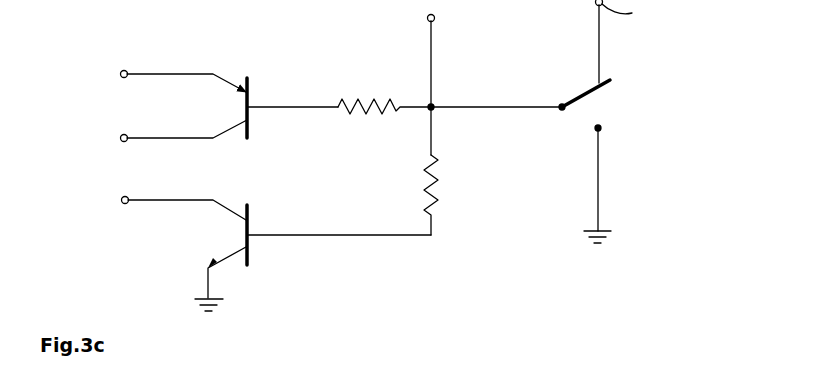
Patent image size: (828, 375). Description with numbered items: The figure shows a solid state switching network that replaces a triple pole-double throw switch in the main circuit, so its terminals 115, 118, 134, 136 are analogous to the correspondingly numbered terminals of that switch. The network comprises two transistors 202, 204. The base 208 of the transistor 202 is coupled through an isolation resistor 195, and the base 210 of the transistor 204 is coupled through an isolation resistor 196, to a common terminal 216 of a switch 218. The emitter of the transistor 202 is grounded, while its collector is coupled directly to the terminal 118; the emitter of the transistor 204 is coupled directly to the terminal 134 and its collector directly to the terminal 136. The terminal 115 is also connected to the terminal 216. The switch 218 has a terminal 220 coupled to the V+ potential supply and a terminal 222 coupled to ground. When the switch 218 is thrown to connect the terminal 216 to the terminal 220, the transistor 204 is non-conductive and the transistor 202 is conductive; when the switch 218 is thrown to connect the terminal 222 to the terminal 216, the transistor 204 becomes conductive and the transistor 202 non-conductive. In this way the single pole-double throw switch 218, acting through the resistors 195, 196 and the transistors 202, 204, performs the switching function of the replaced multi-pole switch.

The terminal 115 is at (435, 18).
The terminal 118 is at (126, 204).
The terminal 134 is at (124, 70).
The terminal 136 is at (135, 153).
The isolation resistor 195 is at (435, 178).
The isolation resistor 196 is at (363, 97).
The transistor 202 is at (212, 230).
The transistor 204 is at (208, 98).
The base 208 is at (370, 237).
The base 210 is at (293, 109).
The terminal 216 is at (560, 110).
The switch 218 is at (620, 102).
The terminal 220 is at (598, 83).
The terminal 222 is at (600, 128).